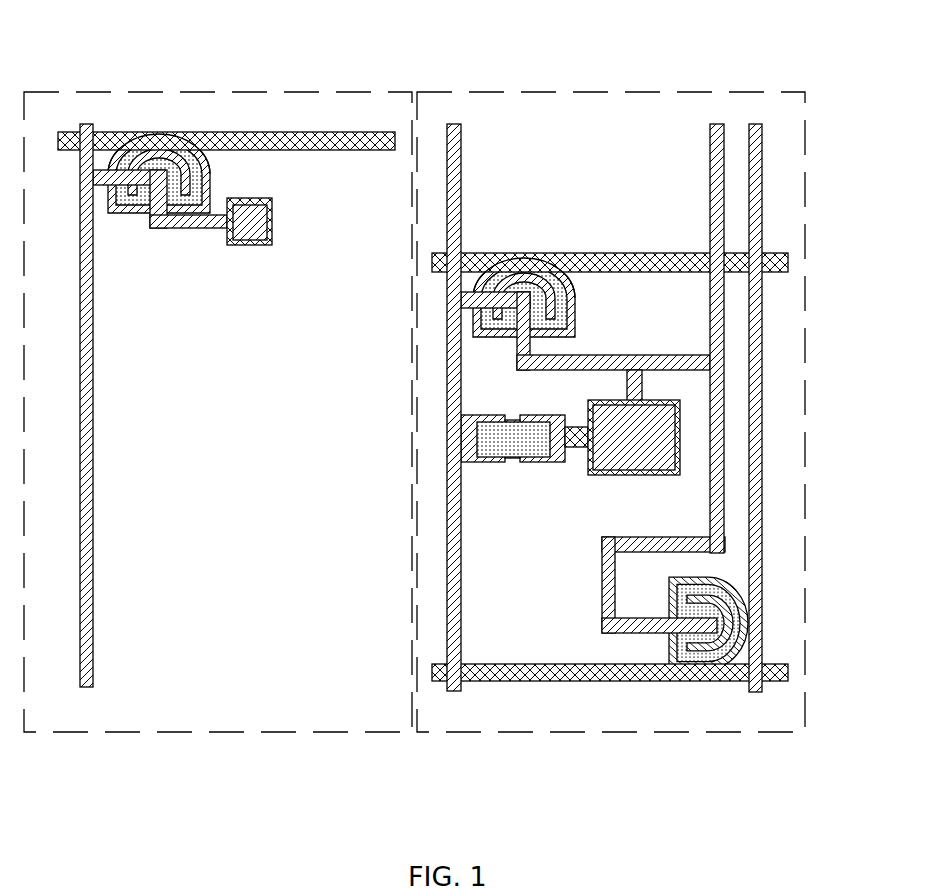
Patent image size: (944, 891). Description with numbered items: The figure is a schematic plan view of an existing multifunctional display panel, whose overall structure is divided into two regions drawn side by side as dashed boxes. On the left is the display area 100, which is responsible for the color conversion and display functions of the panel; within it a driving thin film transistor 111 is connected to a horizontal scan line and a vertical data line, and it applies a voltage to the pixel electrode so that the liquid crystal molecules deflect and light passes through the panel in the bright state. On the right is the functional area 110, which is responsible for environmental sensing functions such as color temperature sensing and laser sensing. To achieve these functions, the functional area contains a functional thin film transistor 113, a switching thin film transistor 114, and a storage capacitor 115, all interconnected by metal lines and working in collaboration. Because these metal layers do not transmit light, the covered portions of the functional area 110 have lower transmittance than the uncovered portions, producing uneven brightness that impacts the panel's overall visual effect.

The display area 100 is at (218, 374).
The functional area 110 is at (645, 374).
The driving thin film transistor 111 is at (158, 130).
The functional thin film transistor 113 is at (540, 257).
The switching thin film transistor 114 is at (722, 579).
The storage capacitor 115 is at (683, 437).